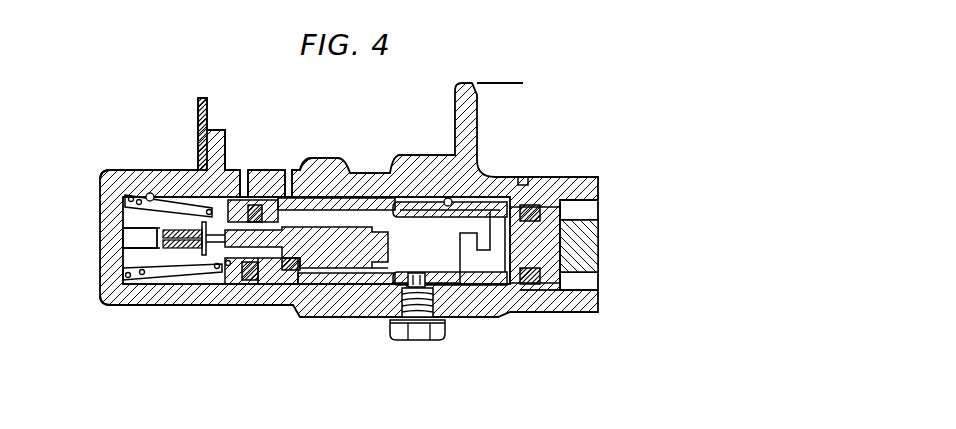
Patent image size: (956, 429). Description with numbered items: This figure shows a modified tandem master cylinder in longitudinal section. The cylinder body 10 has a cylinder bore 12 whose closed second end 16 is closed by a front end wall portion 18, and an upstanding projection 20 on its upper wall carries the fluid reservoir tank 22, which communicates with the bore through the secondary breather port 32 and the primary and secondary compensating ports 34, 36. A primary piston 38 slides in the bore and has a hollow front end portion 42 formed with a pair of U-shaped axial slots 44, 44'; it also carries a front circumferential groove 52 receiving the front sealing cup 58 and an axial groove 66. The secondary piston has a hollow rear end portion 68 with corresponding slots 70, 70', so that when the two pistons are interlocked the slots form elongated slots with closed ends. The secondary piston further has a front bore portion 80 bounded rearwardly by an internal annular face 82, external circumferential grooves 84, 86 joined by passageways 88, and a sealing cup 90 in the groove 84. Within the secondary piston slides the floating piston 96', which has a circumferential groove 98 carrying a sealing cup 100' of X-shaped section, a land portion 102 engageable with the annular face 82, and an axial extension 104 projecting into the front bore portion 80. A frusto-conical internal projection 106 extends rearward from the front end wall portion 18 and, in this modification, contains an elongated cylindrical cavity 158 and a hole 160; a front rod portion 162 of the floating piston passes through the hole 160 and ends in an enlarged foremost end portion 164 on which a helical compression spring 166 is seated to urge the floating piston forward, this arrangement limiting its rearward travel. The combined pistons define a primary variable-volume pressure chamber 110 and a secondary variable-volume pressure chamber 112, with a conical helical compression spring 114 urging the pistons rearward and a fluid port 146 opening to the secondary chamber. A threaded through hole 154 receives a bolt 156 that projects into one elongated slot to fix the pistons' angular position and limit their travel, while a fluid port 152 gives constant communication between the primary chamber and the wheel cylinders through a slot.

The cylinder body 10 is at (563, 176).
The cylinder bore 12 is at (360, 203).
The closed second end 16 is at (120, 305).
The front end wall portion 18 is at (100, 193).
The upstanding projection 20 is at (233, 168).
The fluid reservoir tank 22 is at (200, 115).
The secondary breather port 32 is at (286, 200).
The primary compensating port 34 is at (522, 178).
The secondary compensating port 36 is at (245, 198).
The primary piston 38 is at (581, 259).
The hollow front end portion 42 is at (520, 300).
The axial slot 44 is at (511, 167).
The axial slot 44' is at (506, 317).
The front circumferential groove 52 is at (538, 310).
The front sealing cup 58 is at (555, 300).
The axial groove 66 is at (593, 312).
The hollow rear end portion 68 is at (465, 300).
The axial slot 70 is at (450, 203).
The axial slot 70' is at (426, 329).
The front bore portion 80 is at (227, 300).
The internal annular face 82 is at (330, 203).
The external circumferential groove 84 is at (251, 300).
The external circumferential groove 86 is at (310, 203).
The passageways 88 is at (273, 200).
The sealing cup 90 is at (260, 300).
The floating piston 96' is at (306, 247).
The circumferential groove 98 is at (303, 300).
The sealing cup 100' is at (346, 309).
The land portion 102 is at (272, 300).
The axial extension 104 is at (207, 300).
The frusto-conical internal projection 106 is at (180, 228).
The primary variable-volume pressure chamber 110 is at (372, 317).
The secondary variable-volume pressure chamber 112 is at (185, 300).
The conical helical compression spring 114 is at (148, 195).
The fluid port 146 is at (131, 196).
The fluid port 152 is at (447, 198).
The threaded through hole 154 is at (405, 336).
The bolt 156 is at (420, 340).
The elongated cylindrical cavity 158 is at (122, 240).
The hole 160 is at (187, 230).
The front rod portion 162 is at (173, 300).
The enlarged foremost end portion 164 is at (123, 257).
The helical compression spring 166 is at (140, 303).